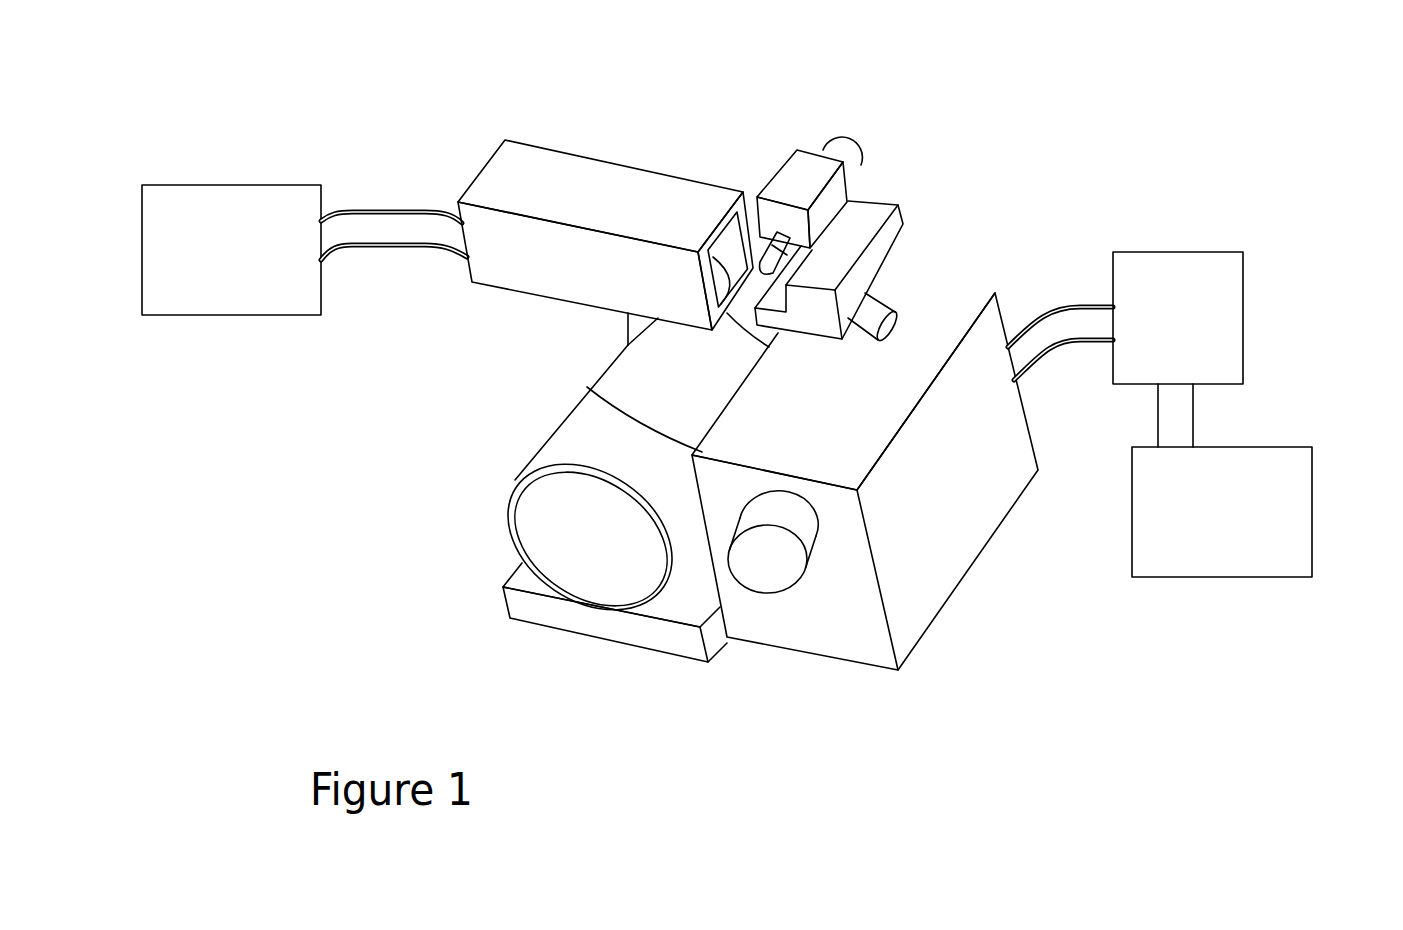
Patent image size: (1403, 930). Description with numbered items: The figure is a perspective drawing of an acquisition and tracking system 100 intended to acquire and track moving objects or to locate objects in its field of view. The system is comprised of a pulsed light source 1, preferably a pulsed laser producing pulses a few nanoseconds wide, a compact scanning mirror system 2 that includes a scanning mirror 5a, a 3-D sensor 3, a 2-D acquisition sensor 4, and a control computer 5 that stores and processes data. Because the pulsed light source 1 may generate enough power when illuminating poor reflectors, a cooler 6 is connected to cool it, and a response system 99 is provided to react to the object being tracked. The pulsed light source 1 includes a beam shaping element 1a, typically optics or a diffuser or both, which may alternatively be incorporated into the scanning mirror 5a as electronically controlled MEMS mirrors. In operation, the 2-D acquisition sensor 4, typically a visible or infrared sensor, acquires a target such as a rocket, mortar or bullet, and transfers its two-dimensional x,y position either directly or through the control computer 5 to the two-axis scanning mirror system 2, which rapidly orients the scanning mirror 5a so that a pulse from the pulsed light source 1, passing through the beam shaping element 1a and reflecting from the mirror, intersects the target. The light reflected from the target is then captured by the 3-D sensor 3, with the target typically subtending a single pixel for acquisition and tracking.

The acquisition and tracking system 100 is at (1055, 160).
The pulsed light source 1 is at (579, 180).
The beam shaping element 1a is at (723, 247).
The compact scanning mirror system 2 is at (878, 273).
The 3-D sensor 3 is at (545, 432).
The 2-D acquisition sensor 4 is at (908, 618).
The control computer 5 is at (1217, 280).
The scanning mirror 5a is at (778, 250).
The cooler 6 is at (245, 270).
The response system 99 is at (1238, 503).